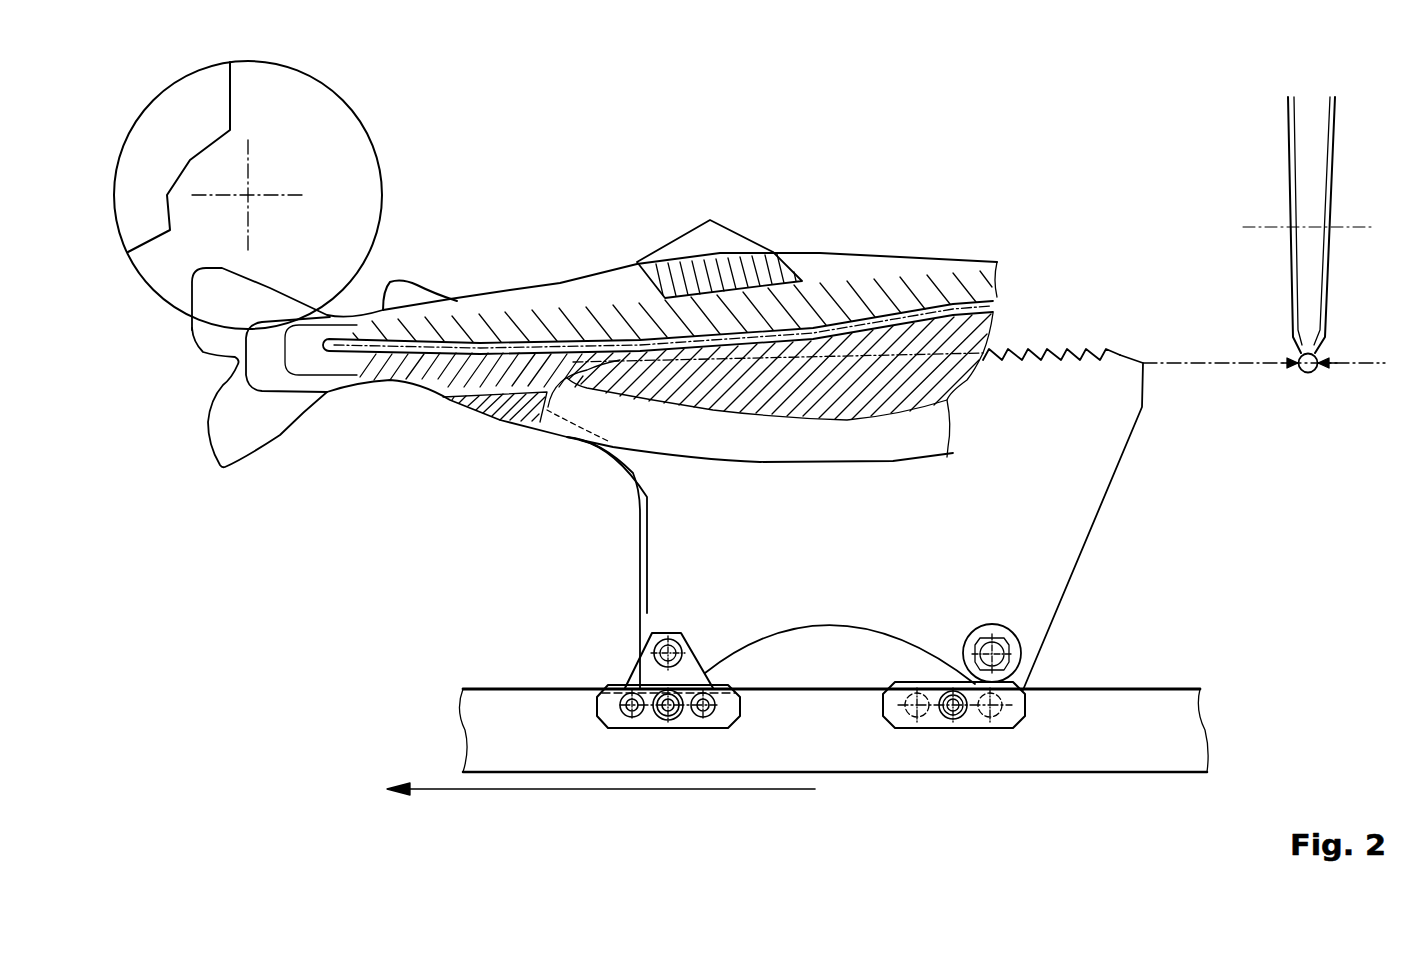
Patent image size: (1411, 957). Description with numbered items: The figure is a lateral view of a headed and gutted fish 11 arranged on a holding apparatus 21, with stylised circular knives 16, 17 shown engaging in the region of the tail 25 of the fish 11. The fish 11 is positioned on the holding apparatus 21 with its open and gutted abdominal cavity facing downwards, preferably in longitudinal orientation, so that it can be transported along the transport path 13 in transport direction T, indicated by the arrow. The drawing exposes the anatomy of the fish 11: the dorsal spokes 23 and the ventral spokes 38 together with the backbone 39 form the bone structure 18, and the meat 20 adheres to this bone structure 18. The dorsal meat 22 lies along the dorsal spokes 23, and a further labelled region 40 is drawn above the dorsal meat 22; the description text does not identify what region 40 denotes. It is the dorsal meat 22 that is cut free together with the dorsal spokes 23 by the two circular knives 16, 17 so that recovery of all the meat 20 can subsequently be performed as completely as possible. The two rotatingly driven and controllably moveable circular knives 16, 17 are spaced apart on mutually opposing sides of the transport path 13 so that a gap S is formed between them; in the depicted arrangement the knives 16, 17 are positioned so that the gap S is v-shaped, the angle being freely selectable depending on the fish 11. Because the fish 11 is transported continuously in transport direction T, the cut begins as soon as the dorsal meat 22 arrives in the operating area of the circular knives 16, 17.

The fish 11 is at (795, 187).
The transport path 13 is at (1180, 732).
The circular knife 16 is at (343, 129).
The circular knife 17 is at (1337, 115).
The bone structure 18 is at (893, 321).
The meat 20 is at (838, 283).
The holding apparatus 21 is at (1070, 533).
The dorsal meat 22 is at (558, 292).
The dorsal spokes 23 is at (495, 317).
The tail 25 is at (292, 437).
The ventral spokes 38 is at (452, 373).
The backbone 39 is at (497, 353).
The protrusion 40 is at (702, 237).
The gap S is at (1325, 367).
The transport direction T is at (517, 790).